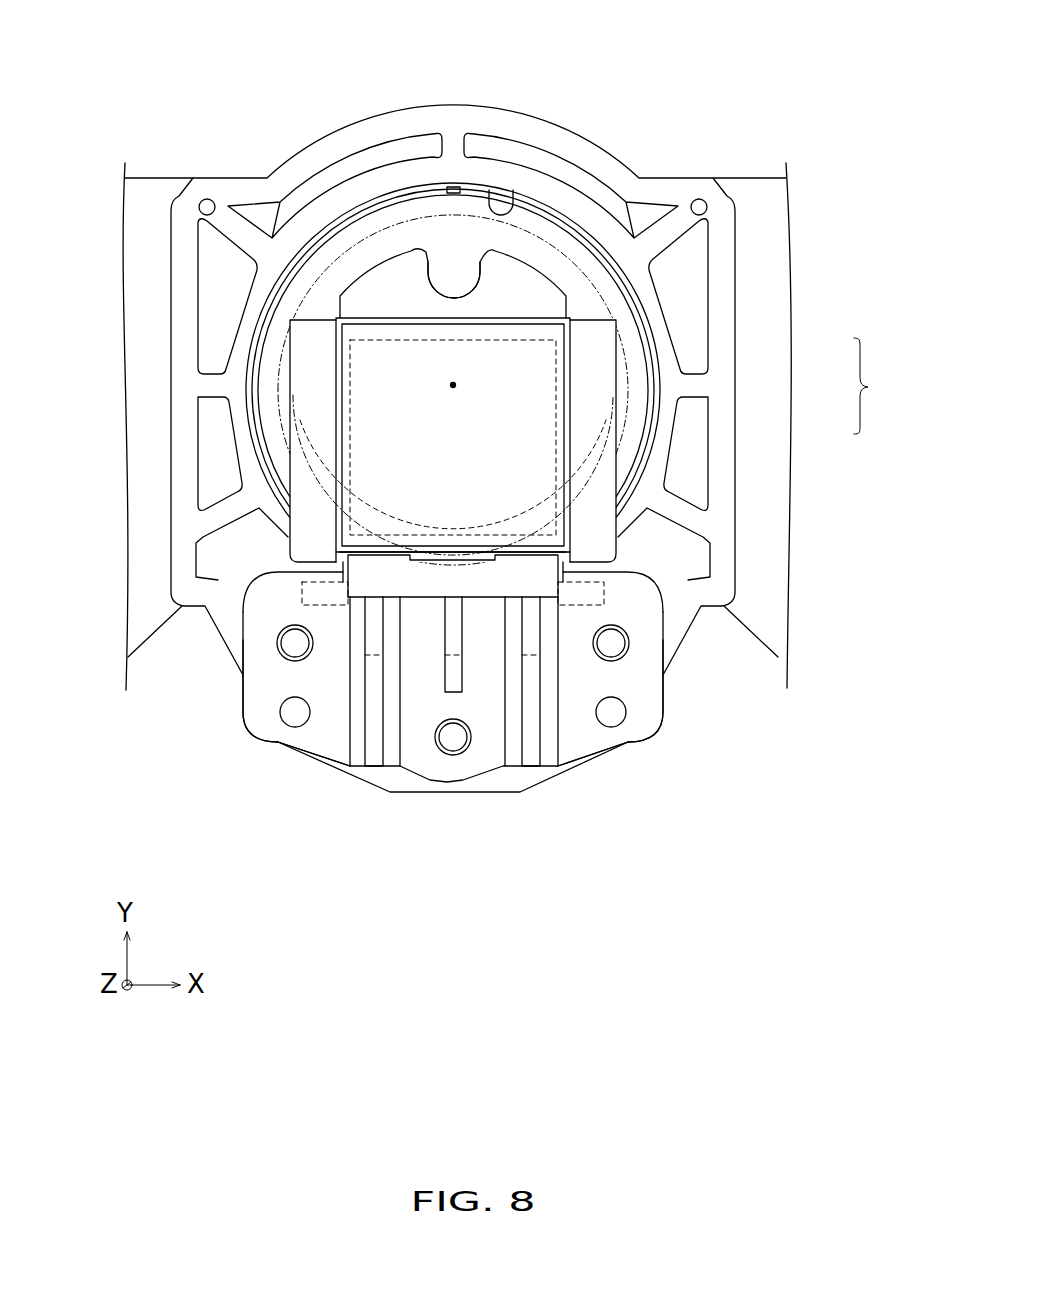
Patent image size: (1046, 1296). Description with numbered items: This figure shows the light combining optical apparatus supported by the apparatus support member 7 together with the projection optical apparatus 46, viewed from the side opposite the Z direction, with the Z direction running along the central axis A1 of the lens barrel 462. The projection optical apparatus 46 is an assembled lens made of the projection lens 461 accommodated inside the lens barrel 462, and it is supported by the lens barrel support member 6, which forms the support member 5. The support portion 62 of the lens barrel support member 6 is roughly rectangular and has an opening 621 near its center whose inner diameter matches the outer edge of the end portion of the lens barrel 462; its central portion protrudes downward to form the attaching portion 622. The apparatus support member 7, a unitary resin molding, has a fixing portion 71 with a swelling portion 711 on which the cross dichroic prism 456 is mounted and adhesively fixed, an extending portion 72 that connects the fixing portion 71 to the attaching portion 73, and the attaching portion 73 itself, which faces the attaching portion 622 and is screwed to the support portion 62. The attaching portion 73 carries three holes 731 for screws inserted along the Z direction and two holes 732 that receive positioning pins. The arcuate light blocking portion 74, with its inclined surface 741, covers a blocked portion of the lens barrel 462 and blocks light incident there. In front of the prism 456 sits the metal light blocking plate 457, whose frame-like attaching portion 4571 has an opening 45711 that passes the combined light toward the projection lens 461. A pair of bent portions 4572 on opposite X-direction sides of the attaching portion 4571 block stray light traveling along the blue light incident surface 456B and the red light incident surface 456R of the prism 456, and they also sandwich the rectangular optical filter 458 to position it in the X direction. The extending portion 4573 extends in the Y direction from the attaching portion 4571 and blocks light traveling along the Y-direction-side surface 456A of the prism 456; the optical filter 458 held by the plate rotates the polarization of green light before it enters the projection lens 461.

The support member 5 is at (772, 85).
The lens barrel support member 6 is at (457, 390).
The support portion 62 is at (673, 178).
The opening 621 is at (505, 212).
The attaching portion 622 is at (388, 778).
The apparatus support member 7 is at (466, 661).
The fixing portion 71 is at (516, 527).
The swelling portion 711 is at (514, 540).
The extending portion 72 is at (513, 713).
The attaching portion 73 is at (602, 740).
The holes 731 is at (290, 642).
The holes 732 is at (303, 718).
The light blocking portion 74 is at (453, 500).
The inclined surface 741 is at (390, 530).
The projection optical apparatus 46 is at (871, 386).
The projection lens 461 is at (640, 307).
The lens barrel 462 is at (633, 430).
The cross dichroic prism 456 is at (761, 365).
The Y-direction-side surface 456A is at (459, 297).
The light incident surface 456B is at (600, 465).
The light incident surface 456R is at (336, 367).
The light blocking plate 457 is at (436, 302).
The attaching portion 4571 is at (330, 280).
The opening 45711 is at (548, 272).
The bent portions 4572 is at (296, 532).
The extending portion 4573 is at (412, 258).
The optical filter 458 is at (365, 303).
The central axis A1 is at (453, 385).